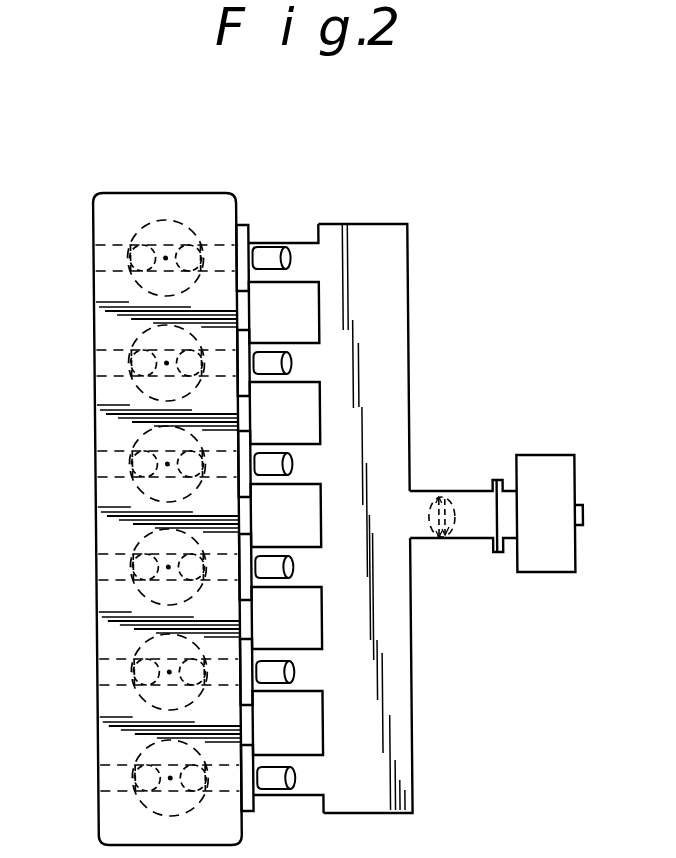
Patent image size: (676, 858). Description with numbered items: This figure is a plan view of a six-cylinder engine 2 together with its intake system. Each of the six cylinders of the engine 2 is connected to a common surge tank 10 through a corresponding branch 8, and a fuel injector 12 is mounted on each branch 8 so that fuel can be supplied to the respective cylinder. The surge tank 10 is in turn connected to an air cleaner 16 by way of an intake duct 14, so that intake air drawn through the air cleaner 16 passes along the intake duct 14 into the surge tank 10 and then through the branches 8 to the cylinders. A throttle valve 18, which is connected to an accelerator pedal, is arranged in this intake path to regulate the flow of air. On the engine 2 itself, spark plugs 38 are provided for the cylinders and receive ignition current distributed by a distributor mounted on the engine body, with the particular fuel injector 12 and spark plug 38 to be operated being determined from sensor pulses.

The six-cylinder engine 2 is at (186, 194).
The branch 8 is at (306, 252).
The surge tank 10 is at (375, 250).
The fuel injector 12 is at (272, 252).
The intake duct 14 is at (469, 510).
The air cleaner 16 is at (538, 478).
The throttle valve 18 is at (449, 537).
The spark plug 38 is at (163, 256).